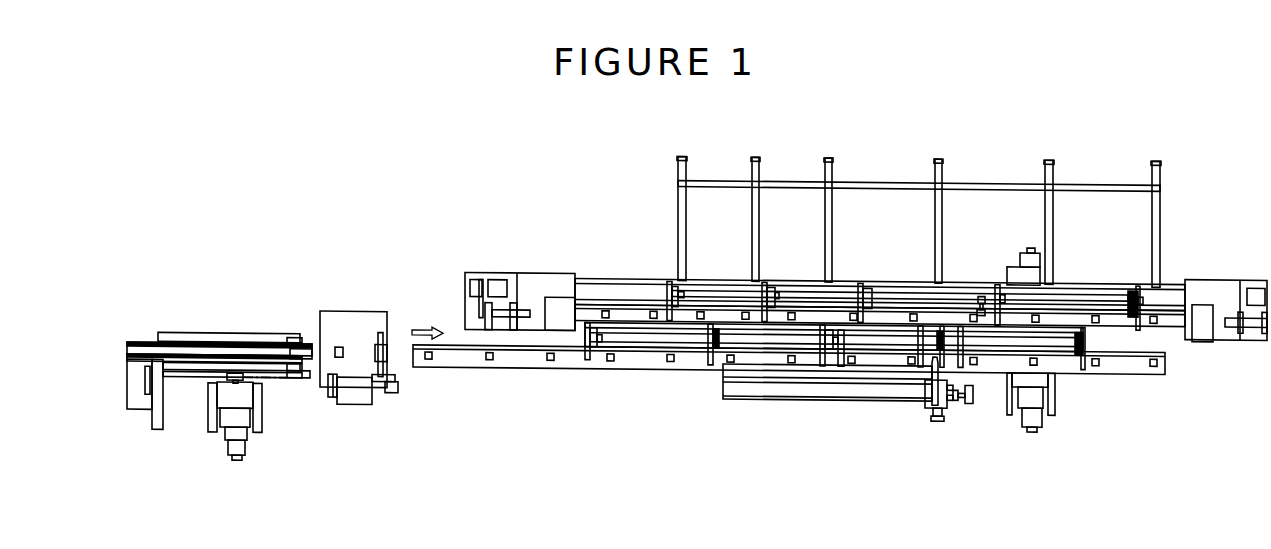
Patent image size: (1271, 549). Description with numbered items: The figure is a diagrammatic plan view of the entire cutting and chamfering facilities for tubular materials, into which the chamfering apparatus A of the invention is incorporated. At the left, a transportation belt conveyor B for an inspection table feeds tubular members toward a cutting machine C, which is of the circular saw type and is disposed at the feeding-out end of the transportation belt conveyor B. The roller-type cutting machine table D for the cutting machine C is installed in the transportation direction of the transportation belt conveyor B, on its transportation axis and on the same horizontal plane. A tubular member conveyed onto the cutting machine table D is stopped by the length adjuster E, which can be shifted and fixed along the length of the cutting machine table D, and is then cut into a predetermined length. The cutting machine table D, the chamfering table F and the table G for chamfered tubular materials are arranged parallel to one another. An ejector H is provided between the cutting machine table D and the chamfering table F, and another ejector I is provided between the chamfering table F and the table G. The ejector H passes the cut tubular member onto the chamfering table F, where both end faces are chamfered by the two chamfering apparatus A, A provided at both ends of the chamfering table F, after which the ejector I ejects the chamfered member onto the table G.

The chamfering apparatus A is at (518, 273).
The transportation belt conveyor B is at (144, 338).
The cutting machine C is at (360, 308).
The cutting machine table D is at (645, 356).
The length adjuster E is at (923, 398).
The chamfering table F is at (625, 311).
The table for chamfered tubular materials G is at (887, 183).
The ejector H is at (708, 360).
The ejector I is at (867, 282).